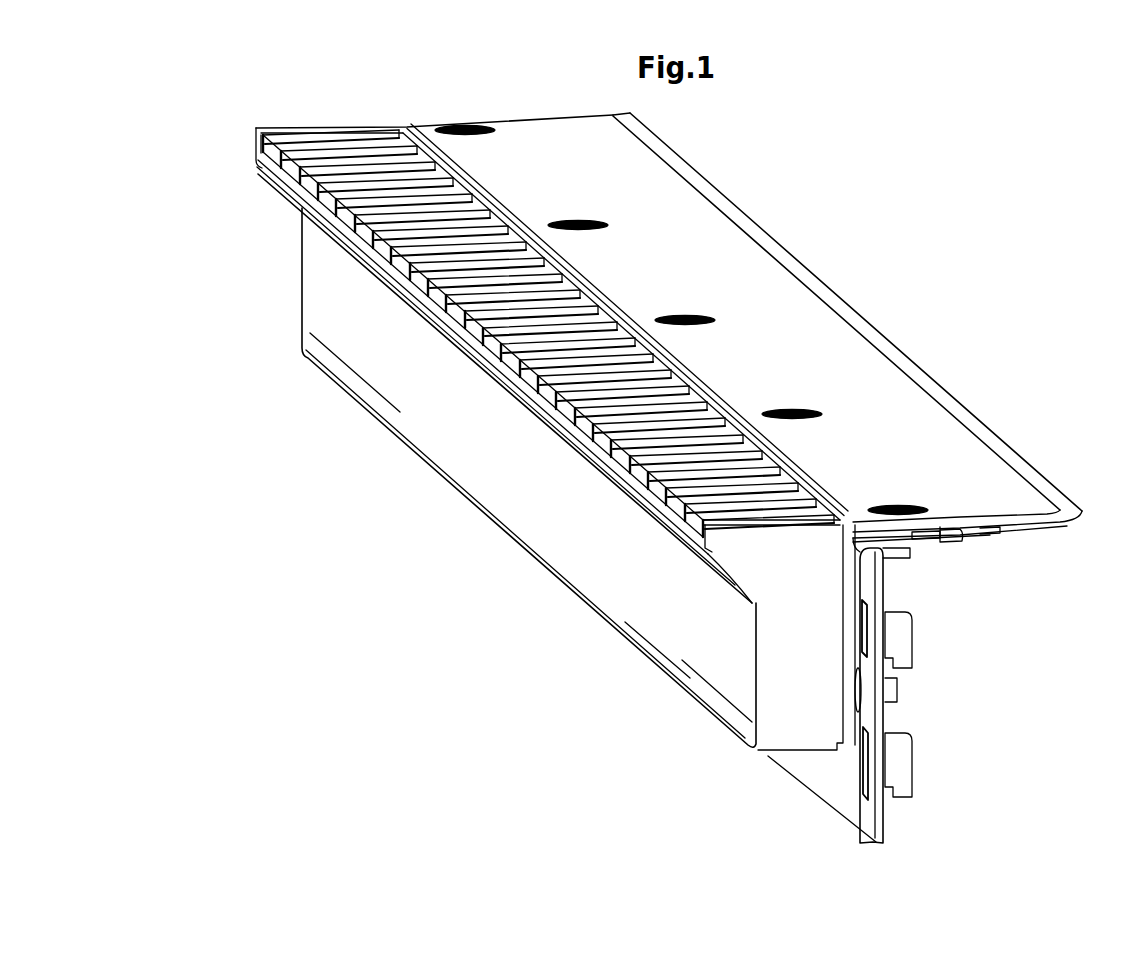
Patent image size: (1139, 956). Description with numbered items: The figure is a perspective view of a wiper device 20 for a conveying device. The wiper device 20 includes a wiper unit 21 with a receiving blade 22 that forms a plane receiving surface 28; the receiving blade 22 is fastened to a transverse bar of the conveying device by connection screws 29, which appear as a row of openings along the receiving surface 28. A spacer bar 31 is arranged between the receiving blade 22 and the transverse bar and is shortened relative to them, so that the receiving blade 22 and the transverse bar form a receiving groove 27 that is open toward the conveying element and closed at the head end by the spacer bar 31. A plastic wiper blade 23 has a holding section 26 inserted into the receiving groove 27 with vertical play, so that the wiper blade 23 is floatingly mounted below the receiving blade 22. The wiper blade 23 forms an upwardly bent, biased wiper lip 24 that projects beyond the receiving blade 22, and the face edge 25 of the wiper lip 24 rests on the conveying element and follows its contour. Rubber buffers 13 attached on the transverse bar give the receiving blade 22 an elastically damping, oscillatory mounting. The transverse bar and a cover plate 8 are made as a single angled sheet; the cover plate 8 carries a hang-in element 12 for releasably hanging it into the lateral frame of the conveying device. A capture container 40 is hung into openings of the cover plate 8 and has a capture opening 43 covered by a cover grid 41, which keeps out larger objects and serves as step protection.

The cover plate 8 is at (879, 812).
The hang-in element 12 is at (903, 647).
The rubber buffers 13 is at (894, 553).
The wiper device 20 is at (410, 490).
The wiper unit 21 is at (428, 113).
The receiving blade 22 is at (1017, 518).
The wiper blade 23 is at (951, 405).
The wiper lip 24 is at (703, 190).
The face edge 25 is at (864, 322).
The holding section 26 is at (987, 533).
The receiving groove 27 is at (943, 532).
The receiving surface 28 is at (560, 158).
The connection screws 29 is at (608, 232).
The spacer bar 31 is at (914, 532).
The capture container 40 is at (540, 523).
The cover grid 41 is at (325, 140).
The capture opening 43 is at (367, 150).